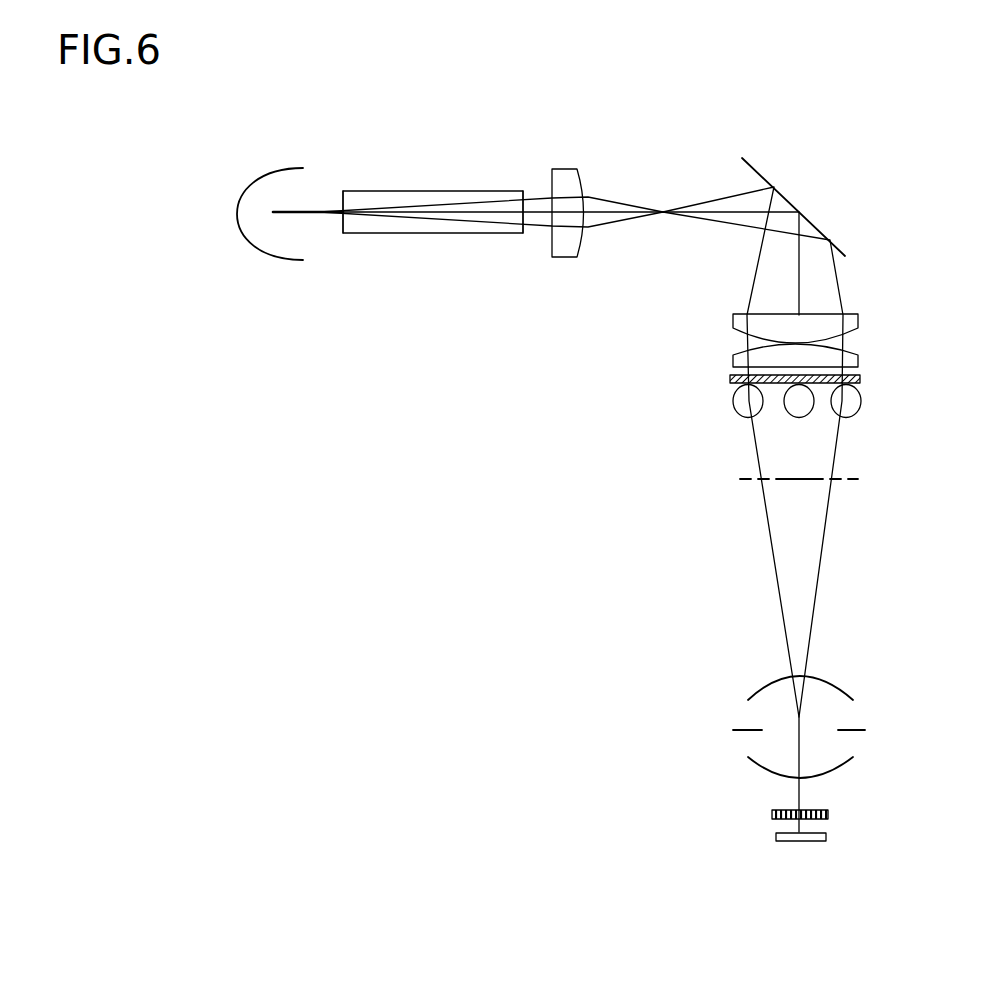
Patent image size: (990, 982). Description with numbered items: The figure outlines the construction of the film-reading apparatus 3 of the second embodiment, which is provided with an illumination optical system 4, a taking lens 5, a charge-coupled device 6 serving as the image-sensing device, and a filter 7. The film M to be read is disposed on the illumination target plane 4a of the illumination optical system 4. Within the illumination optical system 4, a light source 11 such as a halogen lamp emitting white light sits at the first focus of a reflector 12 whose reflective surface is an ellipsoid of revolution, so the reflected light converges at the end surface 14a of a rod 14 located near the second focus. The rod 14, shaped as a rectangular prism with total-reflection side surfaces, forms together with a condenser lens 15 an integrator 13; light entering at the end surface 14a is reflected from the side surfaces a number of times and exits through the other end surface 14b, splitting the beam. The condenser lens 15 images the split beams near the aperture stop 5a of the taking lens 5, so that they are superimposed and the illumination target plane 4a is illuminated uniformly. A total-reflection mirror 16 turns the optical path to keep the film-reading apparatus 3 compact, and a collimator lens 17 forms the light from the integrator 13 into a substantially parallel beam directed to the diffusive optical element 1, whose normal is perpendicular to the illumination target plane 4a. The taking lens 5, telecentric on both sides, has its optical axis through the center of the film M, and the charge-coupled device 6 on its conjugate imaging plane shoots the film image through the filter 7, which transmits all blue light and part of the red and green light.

The diffusive optical element 1 is at (729, 379).
The film-reading apparatus 3 is at (592, 881).
The illumination optical system 4 is at (545, 445).
The illumination target plane 4a is at (750, 482).
The film M is at (810, 481).
The taking lens 5 is at (755, 713).
The aperture stop 5a is at (850, 725).
The charge-coupled device (CCD) 6 is at (772, 835).
The filter 7 is at (770, 815).
The light source 11 is at (280, 210).
The reflector 12 is at (287, 262).
The integrator 13 is at (452, 249).
The rod 14 is at (447, 233).
The end surface 14a is at (343, 194).
The other end surface 14b is at (526, 190).
The condenser lens 15 is at (545, 237).
The total-reflection mirror 16 is at (787, 198).
The collimator lens 17 is at (730, 345).